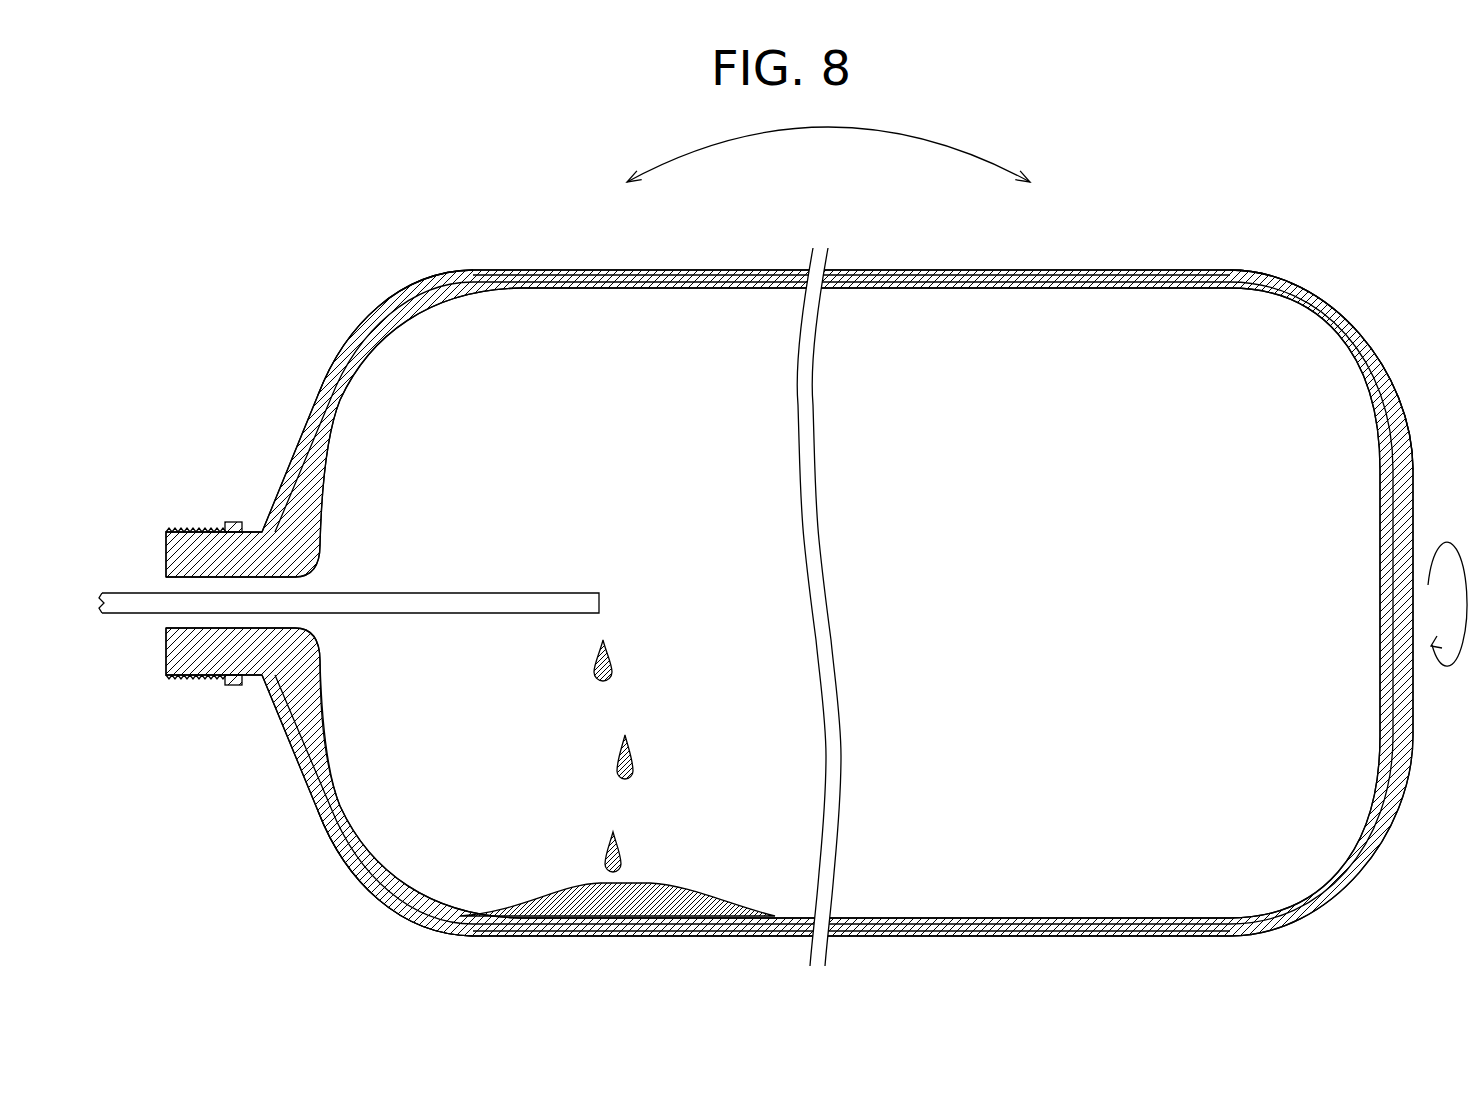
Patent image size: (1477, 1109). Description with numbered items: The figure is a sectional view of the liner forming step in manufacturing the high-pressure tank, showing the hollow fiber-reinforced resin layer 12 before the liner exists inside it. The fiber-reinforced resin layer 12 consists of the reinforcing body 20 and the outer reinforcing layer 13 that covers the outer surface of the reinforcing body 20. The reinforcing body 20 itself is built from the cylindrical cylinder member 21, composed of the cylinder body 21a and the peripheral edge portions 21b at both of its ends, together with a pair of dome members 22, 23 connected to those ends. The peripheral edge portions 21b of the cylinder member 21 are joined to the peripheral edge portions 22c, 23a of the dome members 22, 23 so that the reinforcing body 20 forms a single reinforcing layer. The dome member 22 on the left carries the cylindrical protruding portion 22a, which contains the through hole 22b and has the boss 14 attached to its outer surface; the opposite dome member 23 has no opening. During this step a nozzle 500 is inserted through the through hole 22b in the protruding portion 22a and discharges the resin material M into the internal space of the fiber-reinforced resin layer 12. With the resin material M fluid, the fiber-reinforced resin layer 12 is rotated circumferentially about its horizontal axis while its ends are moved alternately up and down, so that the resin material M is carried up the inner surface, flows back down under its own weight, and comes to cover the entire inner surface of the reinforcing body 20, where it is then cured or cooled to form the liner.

The fiber-reinforced resin layer 12 is at (882, 212).
The outer reinforcing layer 13 is at (902, 270).
The reinforcing body 20 is at (958, 283).
The cylinder member 21 is at (862, 288).
The cylinder body 21a is at (1055, 288).
The peripheral edge portions 21b is at (545, 290).
The dome member 22 is at (320, 468).
The protruding portion 22a is at (168, 571).
The through hole 22b is at (172, 630).
The peripheral edge portion 22c is at (483, 270).
The dome member 23 is at (1382, 528).
The peripheral edge portion 23a is at (1200, 273).
The boss 14 is at (237, 520).
The nozzle 500 is at (491, 598).
The resin material M is at (611, 660).